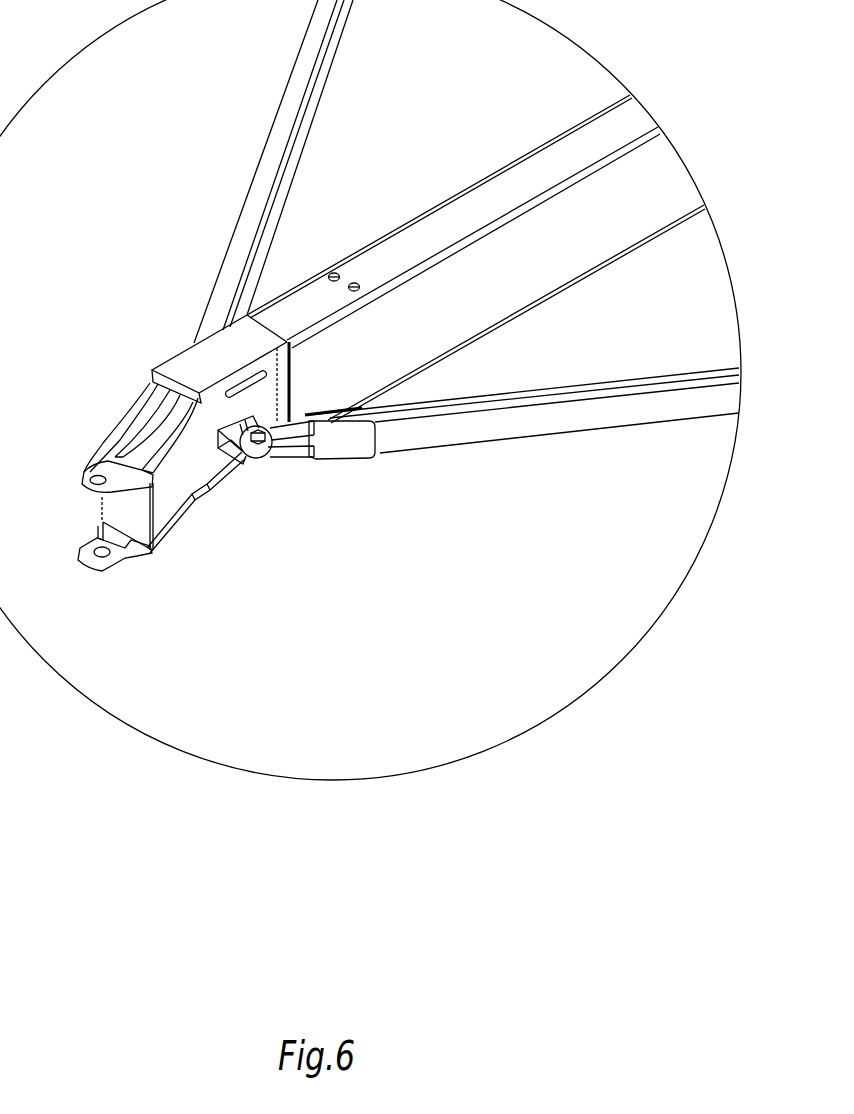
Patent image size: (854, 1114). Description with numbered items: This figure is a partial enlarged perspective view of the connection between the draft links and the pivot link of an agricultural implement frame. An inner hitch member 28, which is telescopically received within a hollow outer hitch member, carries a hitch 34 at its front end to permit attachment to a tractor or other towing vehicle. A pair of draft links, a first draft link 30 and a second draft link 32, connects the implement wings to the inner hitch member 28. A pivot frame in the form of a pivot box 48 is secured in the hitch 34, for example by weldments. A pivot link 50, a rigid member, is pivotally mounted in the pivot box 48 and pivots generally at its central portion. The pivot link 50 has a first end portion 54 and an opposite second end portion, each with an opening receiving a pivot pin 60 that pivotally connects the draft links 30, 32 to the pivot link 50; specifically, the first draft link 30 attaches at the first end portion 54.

The inner hitch member 28 is at (525, 172).
The first draft link 30 is at (560, 420).
The second draft link 32 is at (303, 67).
The hitch 34 is at (167, 497).
The pivot box 48 is at (250, 462).
The pivot link 50 is at (227, 427).
The first end portion 54 is at (252, 412).
The pivot pins 60 is at (230, 430).